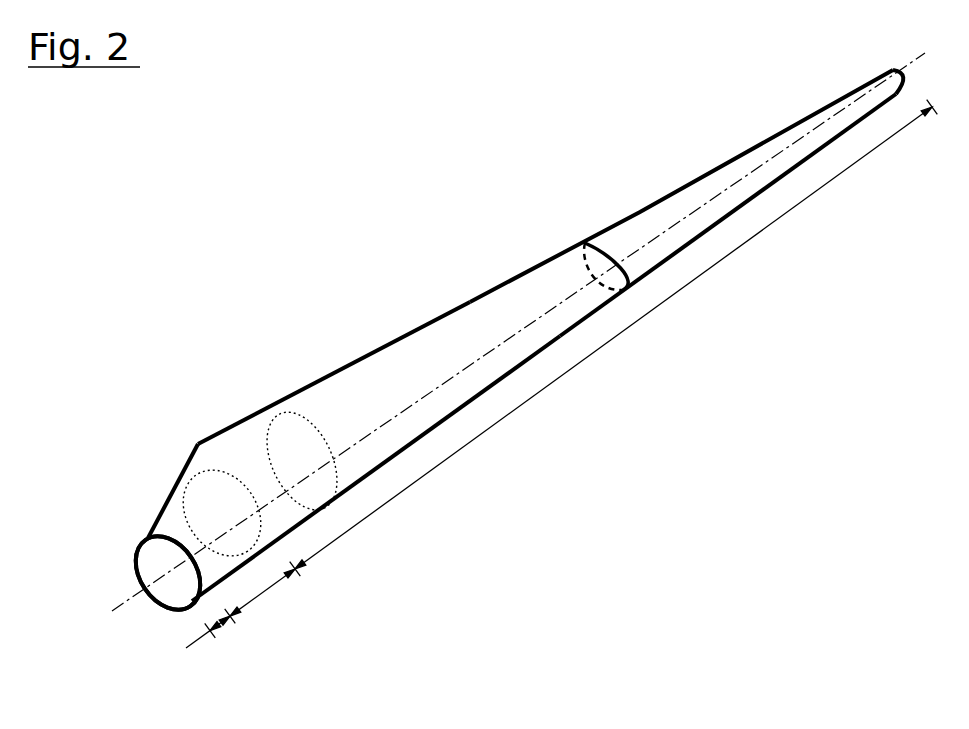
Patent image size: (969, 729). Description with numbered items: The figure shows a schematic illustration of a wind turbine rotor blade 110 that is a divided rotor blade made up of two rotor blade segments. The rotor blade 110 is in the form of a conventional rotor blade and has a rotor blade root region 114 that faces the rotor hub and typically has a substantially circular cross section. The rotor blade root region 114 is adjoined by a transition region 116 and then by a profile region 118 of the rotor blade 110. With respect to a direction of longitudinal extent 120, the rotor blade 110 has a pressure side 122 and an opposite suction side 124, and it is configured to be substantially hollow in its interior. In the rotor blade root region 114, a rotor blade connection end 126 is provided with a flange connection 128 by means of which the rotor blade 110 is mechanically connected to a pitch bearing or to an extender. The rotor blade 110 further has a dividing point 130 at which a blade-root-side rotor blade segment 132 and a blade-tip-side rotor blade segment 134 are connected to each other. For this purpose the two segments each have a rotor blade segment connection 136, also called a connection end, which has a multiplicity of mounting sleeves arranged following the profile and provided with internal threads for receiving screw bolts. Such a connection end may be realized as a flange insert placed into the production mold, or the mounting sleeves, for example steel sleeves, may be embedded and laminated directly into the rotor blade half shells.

The wind turbine rotor blade 110 is at (600, 480).
The rotor blade root region 114 is at (228, 618).
The transition region 116 is at (283, 594).
The profile region 118 is at (605, 352).
The direction of longitudinal extent 120 is at (430, 392).
The pressure side 122 is at (638, 227).
The suction side 124 is at (443, 297).
The rotor blade connection end 126 is at (173, 580).
The flange connection 128 is at (138, 572).
The dividing point 130 is at (641, 282).
The blade-root-side rotor blade segment 132 is at (385, 382).
The blade-tip-side rotor blade segment 134 is at (740, 177).
The rotor blade segment connection 136 is at (613, 250).